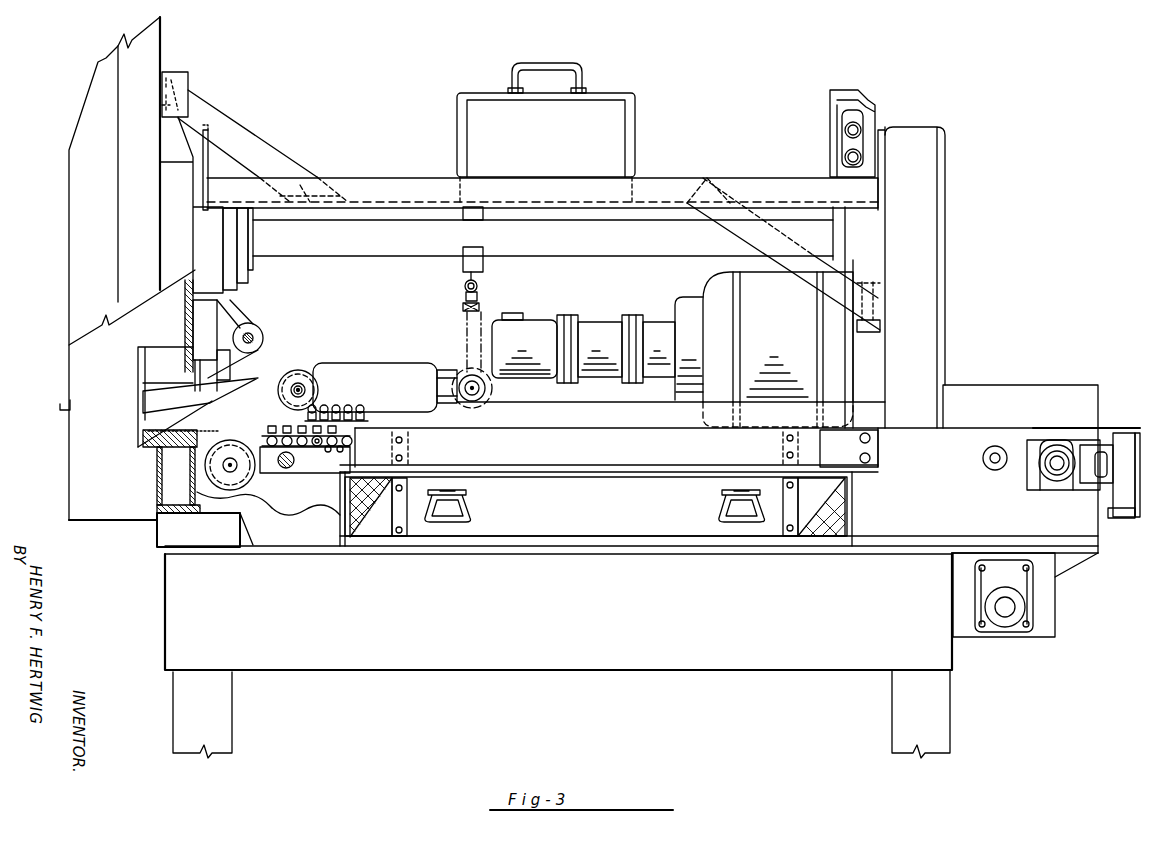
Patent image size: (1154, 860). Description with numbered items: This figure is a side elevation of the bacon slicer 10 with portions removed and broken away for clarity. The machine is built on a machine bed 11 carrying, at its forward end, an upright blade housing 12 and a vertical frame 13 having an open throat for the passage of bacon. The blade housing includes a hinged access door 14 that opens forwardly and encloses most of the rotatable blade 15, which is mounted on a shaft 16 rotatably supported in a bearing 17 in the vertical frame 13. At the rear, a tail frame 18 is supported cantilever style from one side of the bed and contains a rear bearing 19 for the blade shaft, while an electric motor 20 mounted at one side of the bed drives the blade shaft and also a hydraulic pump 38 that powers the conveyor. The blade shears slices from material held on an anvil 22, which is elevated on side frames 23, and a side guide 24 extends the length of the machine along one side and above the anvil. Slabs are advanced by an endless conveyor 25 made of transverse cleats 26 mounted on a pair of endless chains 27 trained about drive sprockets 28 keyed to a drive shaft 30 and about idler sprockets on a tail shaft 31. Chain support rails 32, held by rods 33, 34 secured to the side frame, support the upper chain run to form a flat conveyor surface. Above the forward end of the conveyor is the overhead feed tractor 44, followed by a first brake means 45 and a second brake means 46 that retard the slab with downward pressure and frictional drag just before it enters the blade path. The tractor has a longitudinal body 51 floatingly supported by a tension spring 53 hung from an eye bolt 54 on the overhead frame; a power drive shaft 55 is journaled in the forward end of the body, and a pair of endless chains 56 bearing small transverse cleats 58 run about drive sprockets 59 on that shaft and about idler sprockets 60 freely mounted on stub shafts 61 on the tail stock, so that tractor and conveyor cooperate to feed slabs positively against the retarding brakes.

The slicer 10 is at (150, 552).
The machine bed 11 is at (273, 553).
The upright blade housing 12 is at (162, 50).
The vertical frame 13 is at (208, 163).
The hinged access door 14 is at (70, 148).
The rotatable blade 15 is at (134, 442).
The shaft 16 is at (377, 227).
The bearing 17 is at (207, 270).
The tail frame 18 is at (947, 162).
The rear bearing 19 is at (865, 265).
The electric motor 20 is at (790, 313).
The anvil 22 is at (151, 448).
The side frames 23 is at (912, 507).
The side guide 24 is at (543, 427).
The endless conveyor 25 is at (327, 455).
The transverse cleats 26 is at (293, 427).
The endless chains 27 is at (338, 455).
The drive sprockets 28 is at (232, 490).
The drive shaft 30 is at (234, 471).
The tail shaft 31 is at (1060, 460).
The chain support rails 32 is at (272, 474).
The rod 33 is at (321, 461).
The rod 34 is at (989, 470).
The hydraulic pump 38 is at (530, 324).
The overhead feed tractor 44 is at (404, 358).
The first brake means 45 is at (268, 354).
The second brake means 46 is at (168, 387).
The longitudinal body 51 is at (380, 391).
The tension spring 53 is at (480, 307).
The eye bolt 54 is at (478, 285).
The power drive shaft 55 is at (301, 385).
The endless chains 56 is at (368, 413).
The transverse cleats 58 is at (350, 421).
The drive sprockets 59 is at (305, 387).
The idler sprockets 60 is at (478, 400).
The stub shafts 61 is at (480, 387).